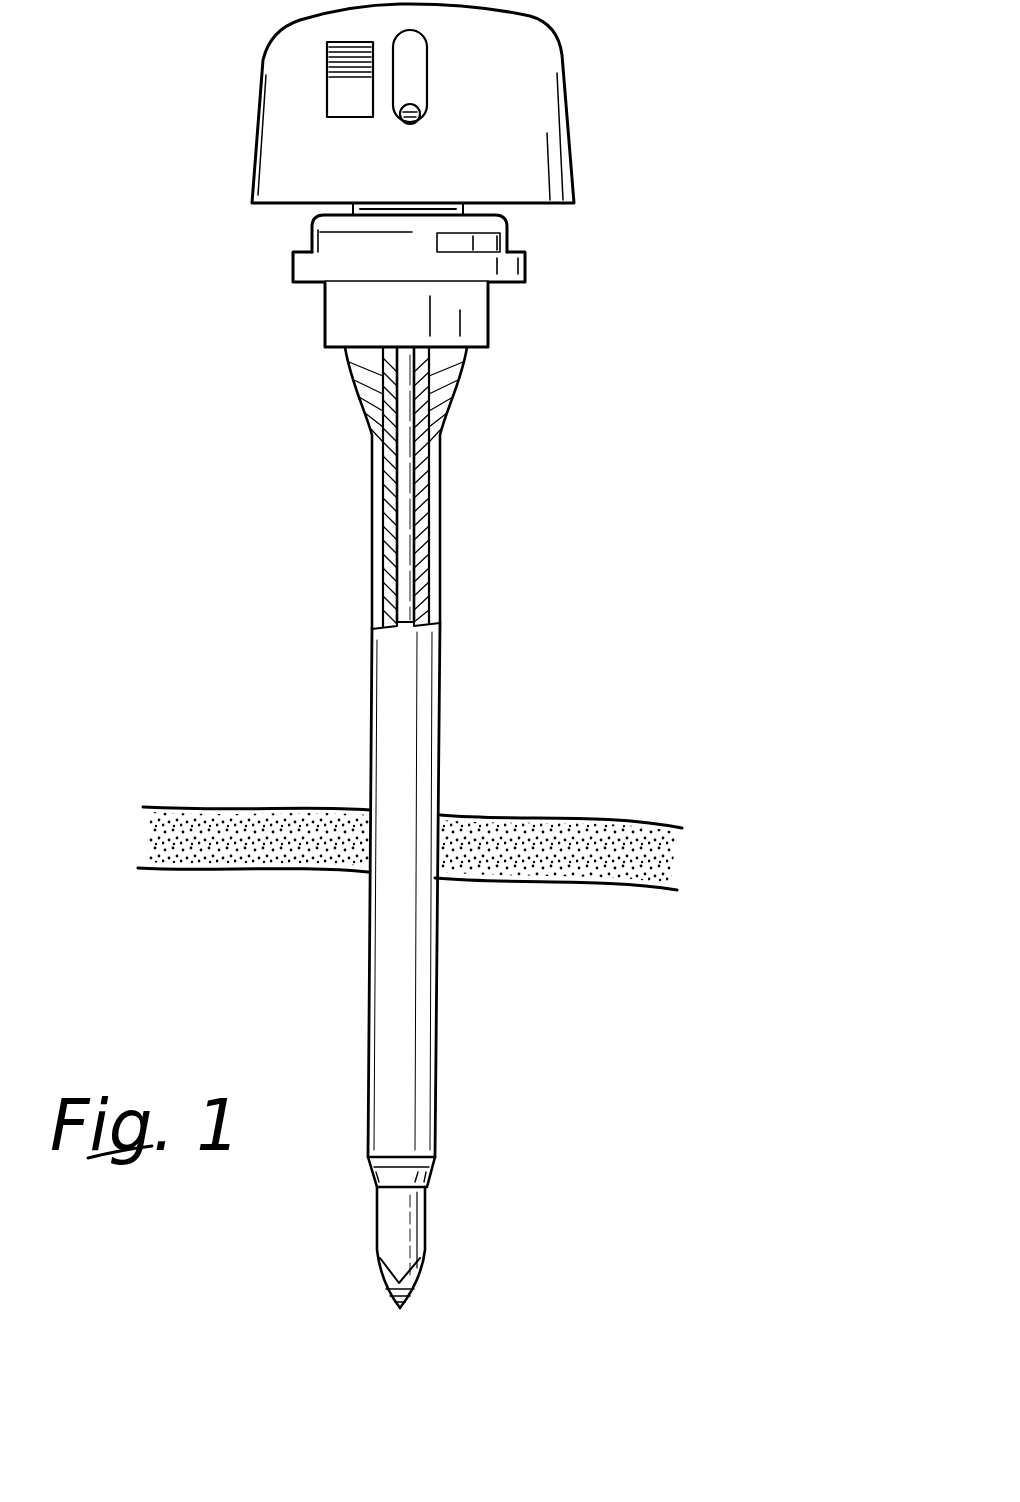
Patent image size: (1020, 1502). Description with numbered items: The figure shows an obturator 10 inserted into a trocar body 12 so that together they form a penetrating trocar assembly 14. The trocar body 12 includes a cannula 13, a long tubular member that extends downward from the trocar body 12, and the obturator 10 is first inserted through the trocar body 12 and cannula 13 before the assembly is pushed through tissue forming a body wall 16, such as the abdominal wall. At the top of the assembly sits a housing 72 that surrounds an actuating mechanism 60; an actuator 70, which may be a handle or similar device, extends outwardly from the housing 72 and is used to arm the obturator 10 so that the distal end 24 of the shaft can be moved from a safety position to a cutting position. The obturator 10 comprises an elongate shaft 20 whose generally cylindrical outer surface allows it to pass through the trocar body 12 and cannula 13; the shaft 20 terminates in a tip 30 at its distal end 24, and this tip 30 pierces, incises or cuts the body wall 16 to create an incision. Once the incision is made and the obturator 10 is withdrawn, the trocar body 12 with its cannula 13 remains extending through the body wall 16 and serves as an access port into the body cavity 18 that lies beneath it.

The obturator 10 is at (634, 131).
The housing 72 is at (252, 152).
The actuator 70 is at (400, 118).
The actuating mechanism 60 is at (553, 209).
The trocar body 12 is at (490, 316).
The penetrating trocar assembly 14 is at (283, 390).
The elongate shaft 20 is at (388, 515).
The cannula 13 is at (371, 590).
The distal end 24 is at (412, 1297).
The tip 30 is at (398, 1307).
The body wall 16 is at (640, 828).
The body cavity 18 is at (486, 924).